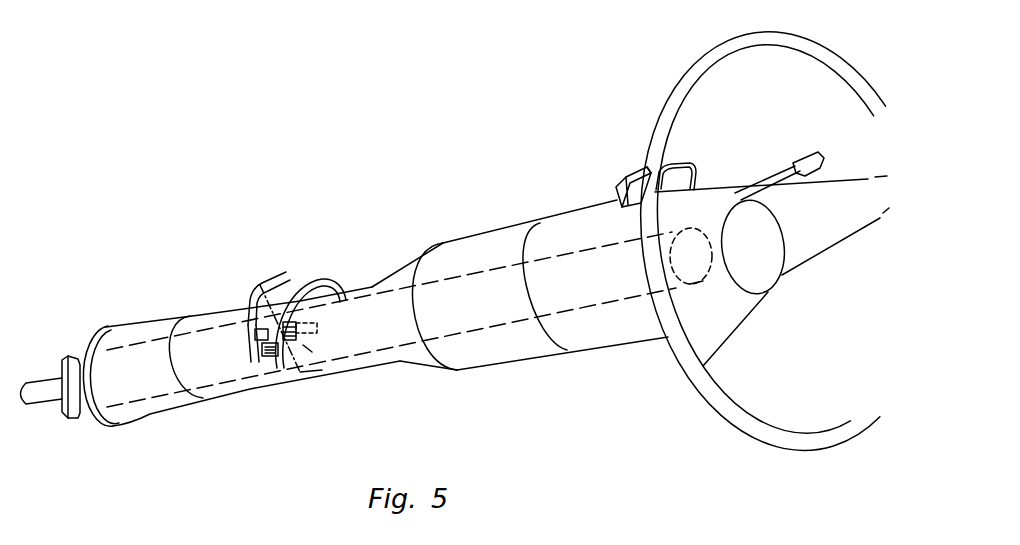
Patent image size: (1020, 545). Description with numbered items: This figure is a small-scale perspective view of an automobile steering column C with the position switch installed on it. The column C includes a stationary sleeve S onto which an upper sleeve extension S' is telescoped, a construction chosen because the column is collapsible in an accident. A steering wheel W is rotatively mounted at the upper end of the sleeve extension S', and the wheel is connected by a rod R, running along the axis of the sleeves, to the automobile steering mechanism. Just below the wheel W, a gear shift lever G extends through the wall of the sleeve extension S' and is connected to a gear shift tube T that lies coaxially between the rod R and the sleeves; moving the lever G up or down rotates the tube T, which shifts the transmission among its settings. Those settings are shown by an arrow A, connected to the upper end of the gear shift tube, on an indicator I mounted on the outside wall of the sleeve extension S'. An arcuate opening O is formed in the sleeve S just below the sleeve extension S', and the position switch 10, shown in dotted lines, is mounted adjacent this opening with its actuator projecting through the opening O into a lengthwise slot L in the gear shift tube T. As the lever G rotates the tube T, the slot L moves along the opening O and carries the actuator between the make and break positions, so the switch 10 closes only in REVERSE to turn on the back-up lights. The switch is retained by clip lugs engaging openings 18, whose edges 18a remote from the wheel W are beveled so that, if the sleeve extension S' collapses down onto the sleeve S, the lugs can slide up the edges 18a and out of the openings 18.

The rod R is at (36, 381).
The gear shift tube T is at (68, 357).
The stationary sleeve S is at (241, 366).
The upper sleeve extension S' is at (520, 280).
The steering column C is at (539, 172).
The position switch 10 is at (252, 280).
The openings 18 is at (291, 280).
The beveled edges 18a is at (268, 364).
The arcuate opening O is at (301, 297).
The lengthwise slot L is at (303, 345).
The indicator I is at (628, 176).
The arrow A is at (680, 168).
The gear shift lever G is at (803, 157).
The steering wheel W is at (713, 60).